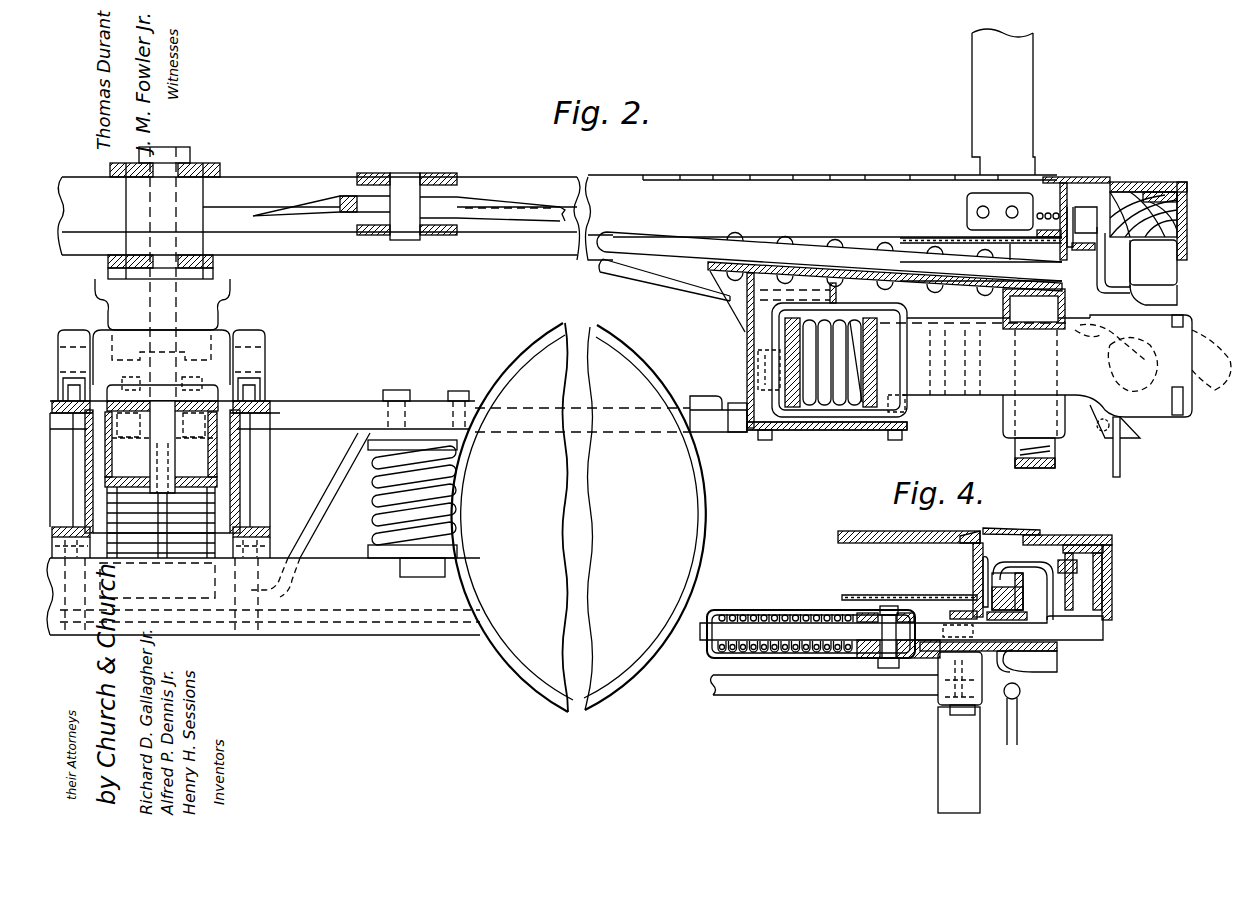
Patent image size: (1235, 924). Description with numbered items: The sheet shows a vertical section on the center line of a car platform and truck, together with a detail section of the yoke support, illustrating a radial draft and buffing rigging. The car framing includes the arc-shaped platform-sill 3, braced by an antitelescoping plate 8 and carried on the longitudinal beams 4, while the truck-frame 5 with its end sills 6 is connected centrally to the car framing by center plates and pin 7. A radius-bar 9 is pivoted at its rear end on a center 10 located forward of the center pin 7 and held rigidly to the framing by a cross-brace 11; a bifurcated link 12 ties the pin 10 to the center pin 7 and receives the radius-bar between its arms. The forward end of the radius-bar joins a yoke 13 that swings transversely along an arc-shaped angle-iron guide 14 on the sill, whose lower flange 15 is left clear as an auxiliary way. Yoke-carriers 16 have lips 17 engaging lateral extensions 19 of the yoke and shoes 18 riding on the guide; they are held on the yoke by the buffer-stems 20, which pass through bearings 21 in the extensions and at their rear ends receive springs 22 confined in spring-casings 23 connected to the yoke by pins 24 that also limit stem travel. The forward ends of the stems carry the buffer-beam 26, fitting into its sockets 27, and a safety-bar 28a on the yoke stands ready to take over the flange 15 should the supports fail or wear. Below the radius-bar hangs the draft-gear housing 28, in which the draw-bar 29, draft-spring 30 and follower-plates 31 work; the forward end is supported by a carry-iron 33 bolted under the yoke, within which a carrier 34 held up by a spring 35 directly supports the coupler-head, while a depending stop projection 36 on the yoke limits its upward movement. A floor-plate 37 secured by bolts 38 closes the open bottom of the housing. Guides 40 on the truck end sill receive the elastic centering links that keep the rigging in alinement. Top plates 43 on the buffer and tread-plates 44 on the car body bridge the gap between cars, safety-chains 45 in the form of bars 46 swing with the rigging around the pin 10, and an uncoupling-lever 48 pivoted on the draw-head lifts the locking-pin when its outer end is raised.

In FIG. 2, the platform-sill 3 is at (1066, 181).
In FIG. 4, the platform-sill 3 is at (980, 536).
In FIG. 2, the longitudinal beams 4 is at (825, 206).
In FIG. 2, the truck-frame 5 is at (313, 432).
In FIG. 2, the end sills 6 is at (720, 433).
In FIG. 2, the center pin 7 is at (152, 161).
In FIG. 2, the antitelescoping plate 8 is at (943, 238).
In FIG. 4, the antitelescoping plate 8 is at (865, 597).
In FIG. 2, the radius-bar 9 is at (770, 251).
In FIG. 2, the center 10 is at (404, 181).
In FIG. 2, the cross-brace 11 is at (460, 181).
In FIG. 2, the link 12 is at (237, 213).
In FIG. 2, the yoke 13 is at (952, 292).
In FIG. 2, the angle-iron guide 14 is at (1070, 207).
In FIG. 4, the angle-iron guide 14 is at (991, 567).
In FIG. 2, the lower flange 15 is at (1113, 233).
In FIG. 4, the lower flange 15 is at (953, 614).
In FIG. 2, the yoke-carriers 16 is at (1113, 260).
In FIG. 4, the yoke-carriers 16 is at (1020, 591).
In FIG. 4, the lips 17 is at (1033, 673).
In FIG. 2, the shoes 18 is at (1085, 243).
In FIG. 4, the shoes 18 is at (1007, 589).
In FIG. 4, the lateral extensions 19 is at (955, 661).
In FIG. 2, the buffer-stems 20 is at (1165, 275).
In FIG. 4, the buffer-stems 20 is at (1066, 641).
In FIG. 4, the bearings 21 is at (930, 659).
In FIG. 4, the springs 22 is at (712, 653).
In FIG. 4, the spring-casings 23 is at (790, 661).
In FIG. 4, the pins 24 is at (894, 606).
In FIG. 2, the buffer-beam 26 is at (1187, 247).
In FIG. 4, the buffer-beam 26 is at (1113, 572).
In FIG. 4, the sockets 27 is at (1113, 582).
In FIG. 2, the draft-gear housing 28 is at (746, 326).
In FIG. 2, the safety-bar 28a is at (1013, 214).
In FIG. 2, the draw-bar 29 is at (1036, 366).
In FIG. 2, the draft-spring 30 is at (848, 408).
In FIG. 2, the follower-plates 31 is at (911, 344).
In FIG. 2, the carry-iron 33 is at (1038, 468).
In FIG. 2, the carrier 34 is at (1034, 384).
In FIG. 2, the spring 35 is at (1055, 451).
In FIG. 2, the stop projection 36 is at (1006, 334).
In FIG. 2, the draft-gear floor-plate 37 is at (823, 429).
In FIG. 2, the bolts 38 is at (765, 441).
In FIG. 2, the guides 40 is at (742, 434).
In FIG. 2, the top plates 43 is at (1165, 190).
In FIG. 4, the top plates 43 is at (1078, 543).
In FIG. 2, the tread-plates 44 is at (1118, 175).
In FIG. 4, the tread-plates 44 is at (1023, 531).
In FIG. 2, the safety-chains 45 is at (1193, 360).
In FIG. 2, the bars 46 is at (333, 208).
In FIG. 2, the uncoupling-lever 48 is at (1122, 441).